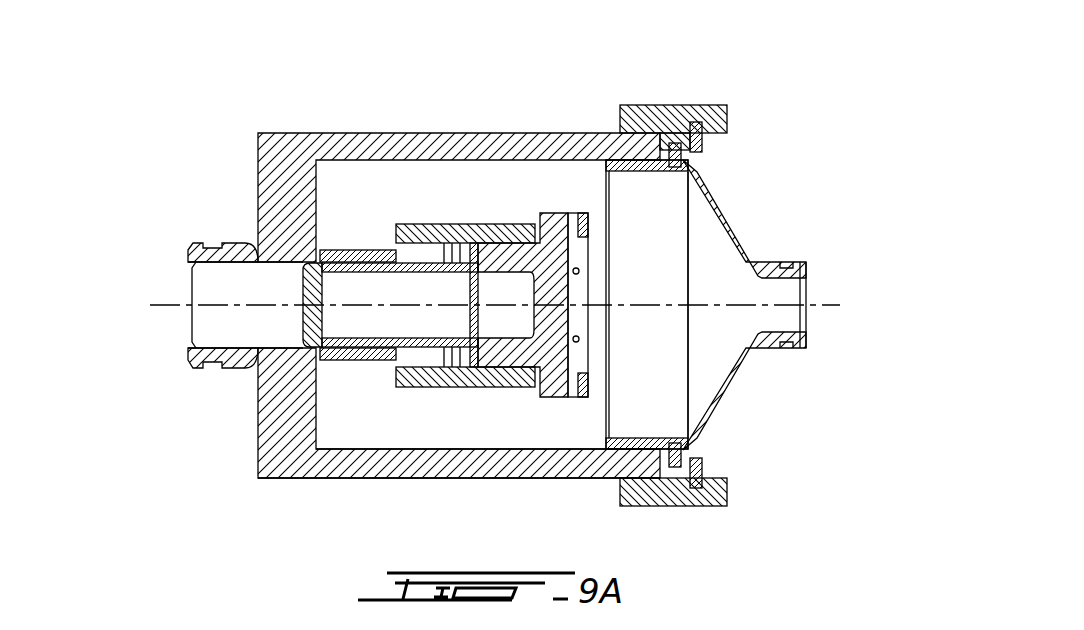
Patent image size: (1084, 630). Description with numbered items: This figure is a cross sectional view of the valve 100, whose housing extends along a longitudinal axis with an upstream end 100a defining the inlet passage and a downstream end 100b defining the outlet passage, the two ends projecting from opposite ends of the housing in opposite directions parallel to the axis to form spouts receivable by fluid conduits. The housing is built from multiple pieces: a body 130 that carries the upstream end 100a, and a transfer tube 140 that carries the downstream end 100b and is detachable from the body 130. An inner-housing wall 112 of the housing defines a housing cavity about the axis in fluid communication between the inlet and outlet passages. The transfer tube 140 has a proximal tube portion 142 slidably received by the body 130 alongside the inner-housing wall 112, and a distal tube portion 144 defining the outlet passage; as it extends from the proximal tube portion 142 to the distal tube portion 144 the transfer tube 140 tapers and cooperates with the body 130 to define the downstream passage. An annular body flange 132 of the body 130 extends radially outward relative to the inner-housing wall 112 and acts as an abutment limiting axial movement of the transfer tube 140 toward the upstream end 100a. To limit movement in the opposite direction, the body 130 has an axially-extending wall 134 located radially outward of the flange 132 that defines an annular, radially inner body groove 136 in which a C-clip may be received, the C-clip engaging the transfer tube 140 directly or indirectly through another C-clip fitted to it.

The valve 100 is at (196, 136).
The upstream end 100a is at (190, 268).
The downstream end 100b is at (808, 288).
The inner-housing wall 112 is at (418, 452).
The body 130 is at (443, 133).
The body flange 132 is at (640, 170).
The axially-extending wall 134 is at (661, 136).
The body groove 136 is at (700, 121).
The transfer tube 140 is at (732, 392).
The proximal tube portion 142 is at (692, 160).
The distal tube portion 144 is at (806, 262).